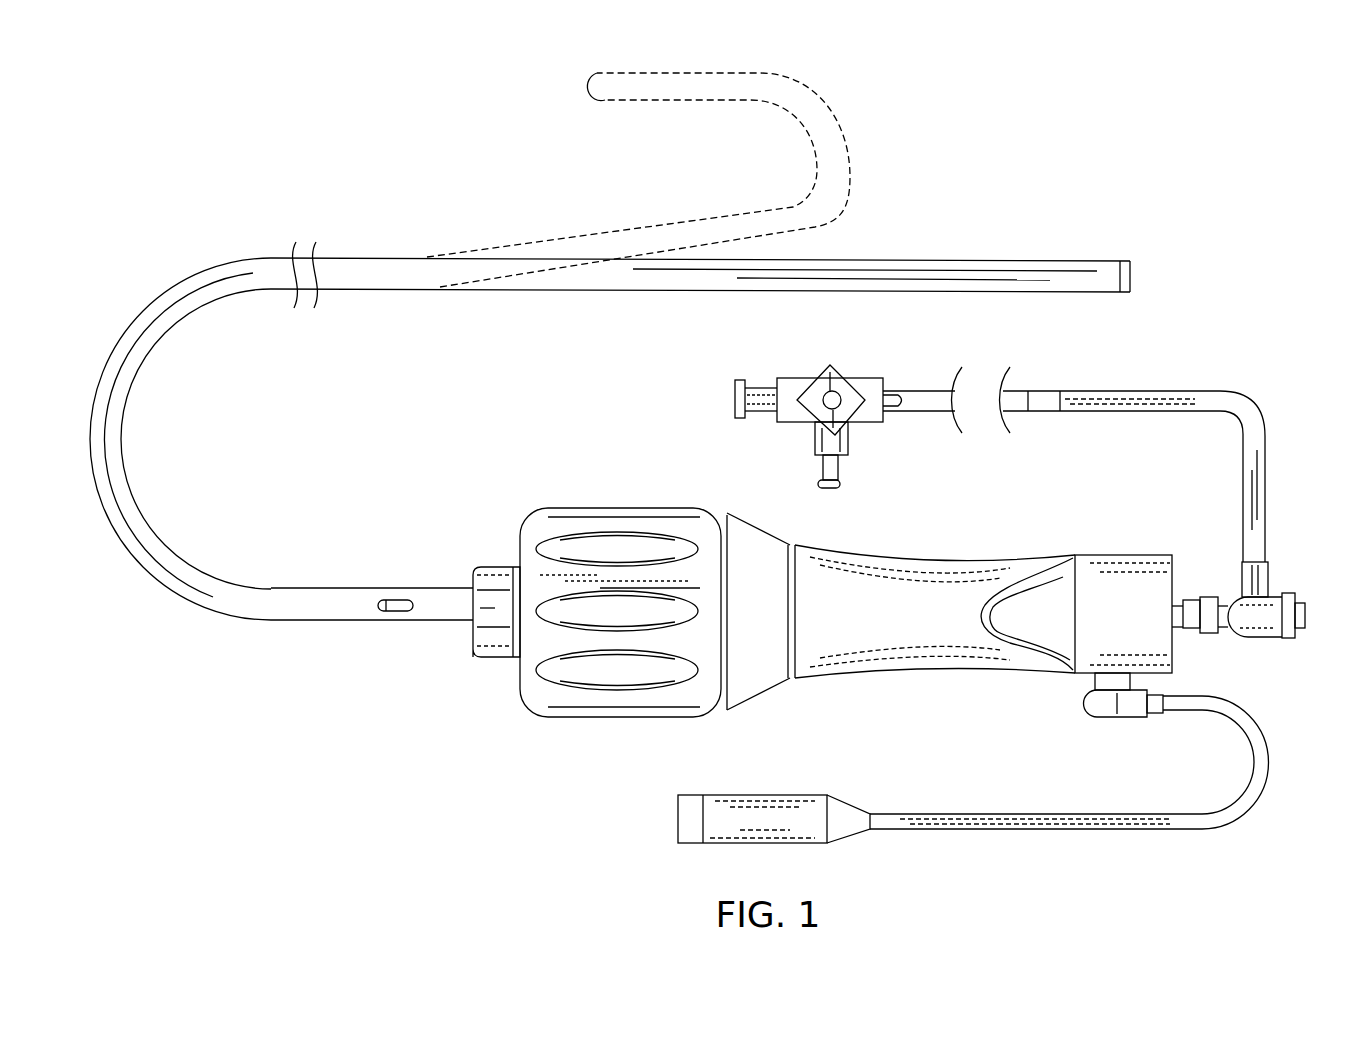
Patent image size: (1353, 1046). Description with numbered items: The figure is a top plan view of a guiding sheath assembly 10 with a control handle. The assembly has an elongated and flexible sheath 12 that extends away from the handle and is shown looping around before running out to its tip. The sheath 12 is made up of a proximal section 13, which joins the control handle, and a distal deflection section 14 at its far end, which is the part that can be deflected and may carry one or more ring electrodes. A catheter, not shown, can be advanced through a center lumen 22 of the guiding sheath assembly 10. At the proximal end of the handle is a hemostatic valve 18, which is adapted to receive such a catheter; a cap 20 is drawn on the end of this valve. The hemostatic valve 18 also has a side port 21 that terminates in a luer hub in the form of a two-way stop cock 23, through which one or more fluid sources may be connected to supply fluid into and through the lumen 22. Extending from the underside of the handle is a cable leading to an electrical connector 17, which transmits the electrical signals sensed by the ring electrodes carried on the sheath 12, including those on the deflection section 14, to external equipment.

The guiding sheath assembly 10 is at (391, 506).
The sheath 12 is at (258, 235).
The proximal section 13 is at (240, 588).
The distal deflection section 14 is at (571, 228).
The electrical connector 17 is at (768, 795).
The hemostatic valve 18 is at (1260, 637).
The cap 20 is at (1288, 595).
The side port 21 is at (1242, 590).
The center lumen 22 is at (390, 612).
The two-way stop cock 23 is at (849, 441).